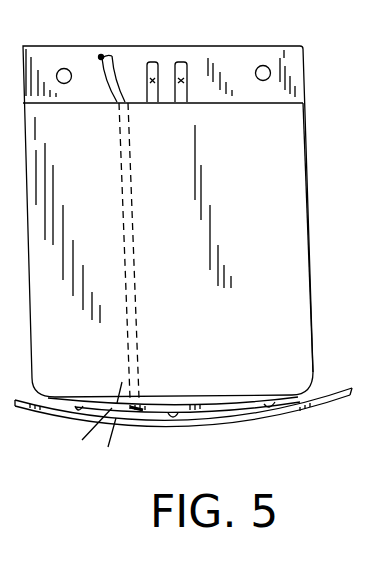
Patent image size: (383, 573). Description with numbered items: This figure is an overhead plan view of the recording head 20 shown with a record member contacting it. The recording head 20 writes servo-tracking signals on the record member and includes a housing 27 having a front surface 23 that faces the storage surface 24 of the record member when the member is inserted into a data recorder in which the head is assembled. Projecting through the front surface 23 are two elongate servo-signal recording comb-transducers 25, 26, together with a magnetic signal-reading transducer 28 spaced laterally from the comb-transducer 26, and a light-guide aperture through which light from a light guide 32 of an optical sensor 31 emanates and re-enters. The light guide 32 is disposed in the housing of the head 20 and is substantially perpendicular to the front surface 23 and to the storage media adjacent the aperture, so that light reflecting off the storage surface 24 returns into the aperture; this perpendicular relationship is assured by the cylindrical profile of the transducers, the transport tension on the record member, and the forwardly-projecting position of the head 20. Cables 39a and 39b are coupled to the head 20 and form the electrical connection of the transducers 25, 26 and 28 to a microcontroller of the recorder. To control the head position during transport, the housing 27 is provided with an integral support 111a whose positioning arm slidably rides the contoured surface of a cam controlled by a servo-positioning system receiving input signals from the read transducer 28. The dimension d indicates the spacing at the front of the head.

The recording head 20 is at (316, 113).
The housing 27 is at (325, 248).
The integral support 111a is at (290, 36).
The cable 39a is at (158, 73).
The cable 39b is at (186, 70).
The optical sensor 31 is at (132, 241).
The light guide 32 is at (140, 270).
The front surface 23 is at (236, 407).
The storage surface 24 is at (343, 388).
The servo-signal recording comb-transducer 25 is at (78, 411).
The servo-signal recording comb-transducer 26 is at (174, 419).
The magnetic signal-reading transducer 28 is at (270, 406).
The gap distance d is at (95, 433).